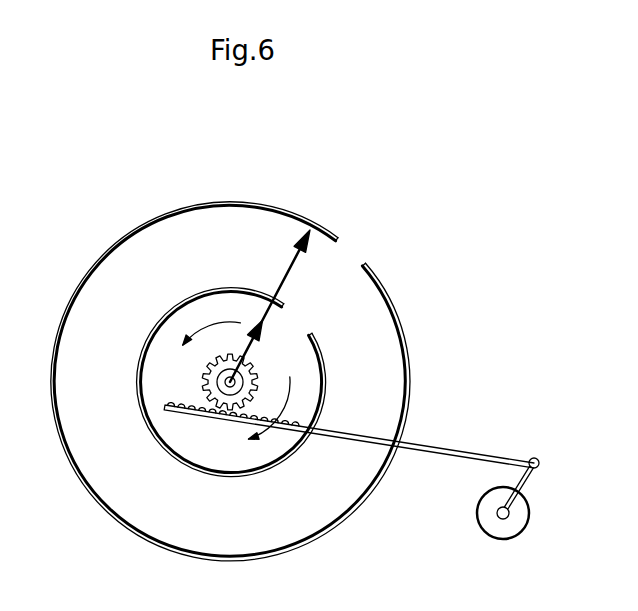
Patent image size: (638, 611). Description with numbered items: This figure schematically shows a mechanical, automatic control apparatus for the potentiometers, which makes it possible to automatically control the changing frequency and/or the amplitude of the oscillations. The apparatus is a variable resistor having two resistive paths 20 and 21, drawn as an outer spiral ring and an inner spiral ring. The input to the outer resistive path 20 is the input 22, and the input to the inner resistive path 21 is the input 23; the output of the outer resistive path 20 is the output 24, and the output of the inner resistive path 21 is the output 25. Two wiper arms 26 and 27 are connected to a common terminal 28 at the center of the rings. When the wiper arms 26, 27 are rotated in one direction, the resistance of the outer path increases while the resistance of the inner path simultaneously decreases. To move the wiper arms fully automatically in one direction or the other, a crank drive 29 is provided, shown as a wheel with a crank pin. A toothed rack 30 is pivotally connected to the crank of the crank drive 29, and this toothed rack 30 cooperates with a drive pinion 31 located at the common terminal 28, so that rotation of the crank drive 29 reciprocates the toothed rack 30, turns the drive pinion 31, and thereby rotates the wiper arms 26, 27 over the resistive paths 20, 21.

The resistive path 20 is at (244, 205).
The resistive path 21 is at (205, 288).
The input 22 is at (338, 239).
The input 23 is at (313, 333).
The output 24 is at (366, 266).
The output 25 is at (285, 309).
The wiper arm 26 is at (298, 242).
The wiper arm 27 is at (257, 327).
The common terminal 28 is at (235, 381).
The crank drive 29 is at (528, 478).
The toothed rack 30 is at (442, 453).
The drive pinion 31 is at (215, 372).